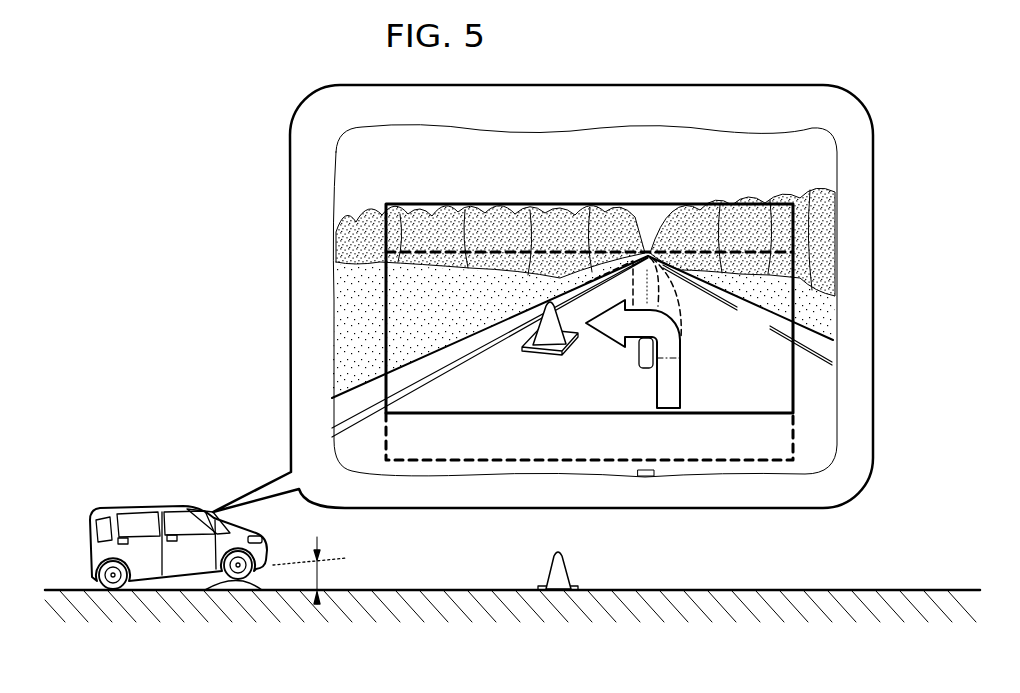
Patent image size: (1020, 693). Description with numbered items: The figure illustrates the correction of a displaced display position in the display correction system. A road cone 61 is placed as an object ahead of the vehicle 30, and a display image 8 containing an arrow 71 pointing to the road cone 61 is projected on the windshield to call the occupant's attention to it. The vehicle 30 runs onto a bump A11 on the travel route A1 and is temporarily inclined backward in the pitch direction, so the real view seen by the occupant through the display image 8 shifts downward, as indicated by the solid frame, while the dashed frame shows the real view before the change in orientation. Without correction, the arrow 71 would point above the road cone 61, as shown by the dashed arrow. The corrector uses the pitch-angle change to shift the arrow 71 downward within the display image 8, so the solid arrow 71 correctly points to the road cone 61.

The display image 8 is at (661, 204).
The arrow 71 is at (682, 319).
The road cone 61 is at (548, 333).
The vehicle 30 is at (137, 507).
The travel route A1 is at (156, 598).
The bump A11 is at (242, 592).